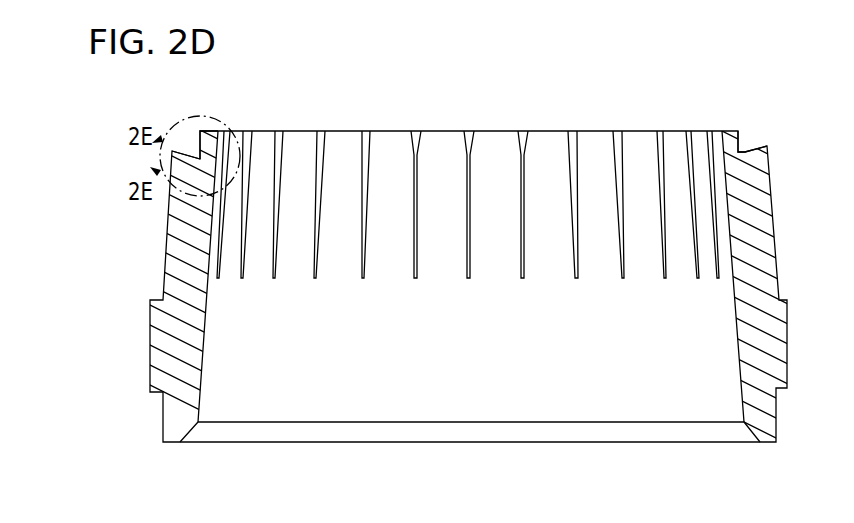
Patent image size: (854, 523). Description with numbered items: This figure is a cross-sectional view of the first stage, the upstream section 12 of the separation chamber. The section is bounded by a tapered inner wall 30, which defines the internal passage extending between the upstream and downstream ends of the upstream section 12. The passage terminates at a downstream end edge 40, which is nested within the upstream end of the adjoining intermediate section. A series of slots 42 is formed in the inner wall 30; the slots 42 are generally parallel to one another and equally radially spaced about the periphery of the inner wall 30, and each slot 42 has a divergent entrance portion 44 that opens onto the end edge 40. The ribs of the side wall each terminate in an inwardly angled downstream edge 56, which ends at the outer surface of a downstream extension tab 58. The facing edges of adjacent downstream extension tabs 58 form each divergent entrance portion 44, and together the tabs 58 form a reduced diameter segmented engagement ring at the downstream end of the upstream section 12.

The upstream section 12 is at (103, 173).
The tapered inner wall 30 is at (212, 330).
The downstream end edge 40 is at (200, 132).
The slots 42 is at (468, 258).
The divergent entrance portion 44 is at (415, 131).
The inwardly angled downstream edge 56 is at (190, 155).
The downstream extension tab 58 is at (739, 131).